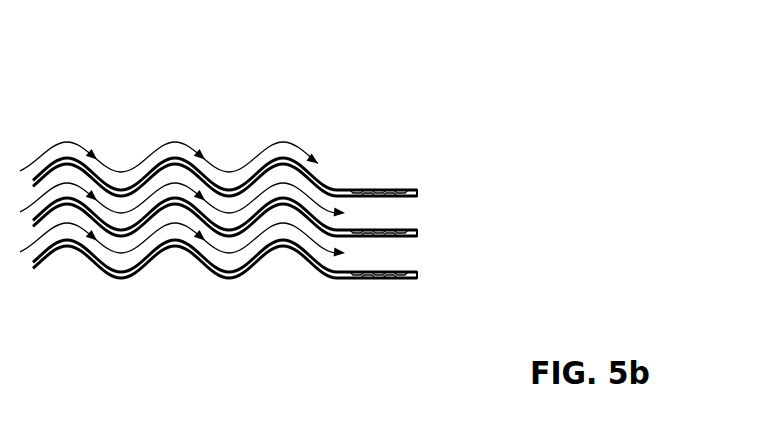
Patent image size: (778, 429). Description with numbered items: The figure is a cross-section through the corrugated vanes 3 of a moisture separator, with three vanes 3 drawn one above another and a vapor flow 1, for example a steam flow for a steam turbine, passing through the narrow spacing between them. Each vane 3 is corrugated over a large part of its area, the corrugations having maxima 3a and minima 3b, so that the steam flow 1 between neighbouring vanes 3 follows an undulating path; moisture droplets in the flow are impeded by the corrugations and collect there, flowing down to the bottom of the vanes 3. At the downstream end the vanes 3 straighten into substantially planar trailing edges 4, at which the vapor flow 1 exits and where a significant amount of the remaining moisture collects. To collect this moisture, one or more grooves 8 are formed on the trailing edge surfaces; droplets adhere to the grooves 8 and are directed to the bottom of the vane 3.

The vapor flow 1 is at (182, 180).
The vane 3 is at (225, 215).
The maxima 3a is at (176, 248).
The minima 3b is at (229, 281).
The trailing edge 4 is at (420, 232).
The groove 8 is at (401, 186).